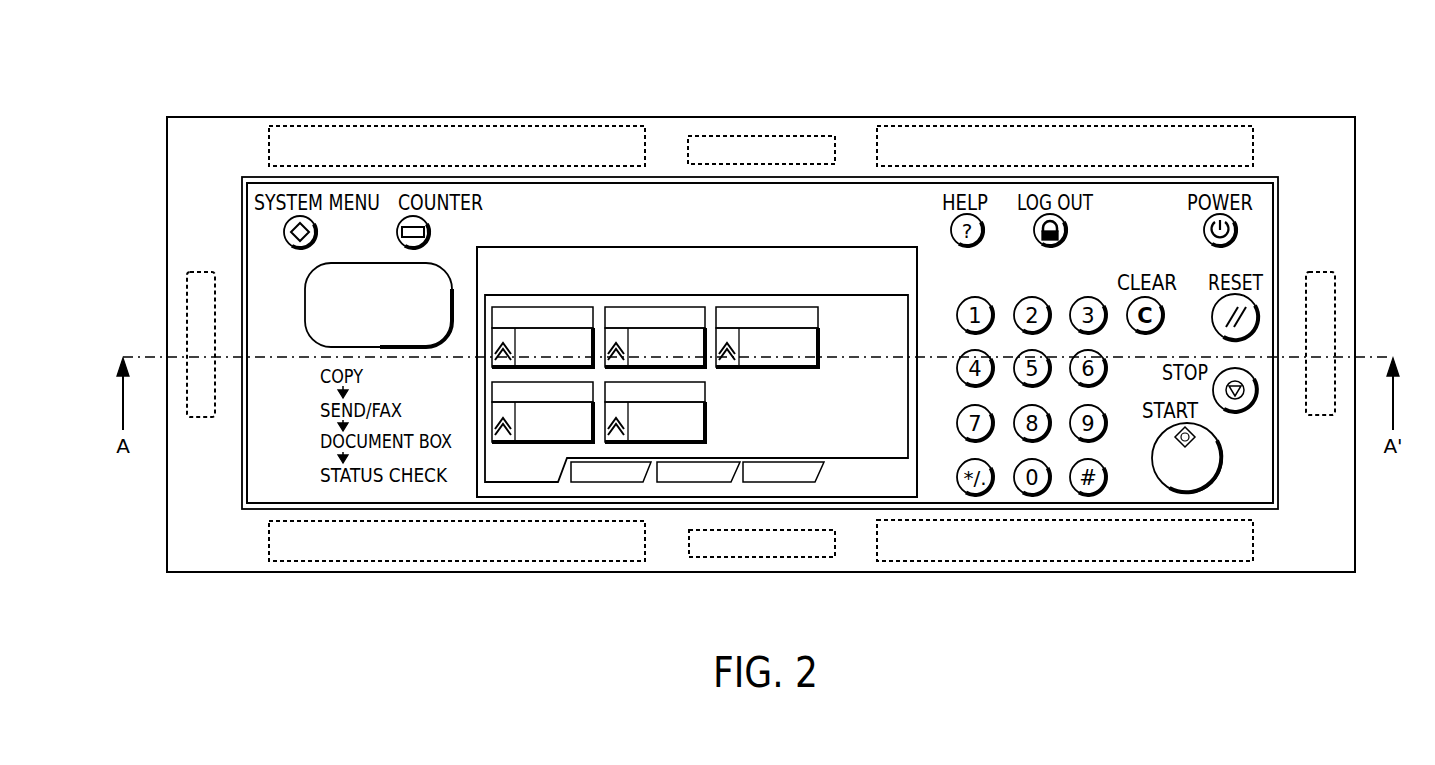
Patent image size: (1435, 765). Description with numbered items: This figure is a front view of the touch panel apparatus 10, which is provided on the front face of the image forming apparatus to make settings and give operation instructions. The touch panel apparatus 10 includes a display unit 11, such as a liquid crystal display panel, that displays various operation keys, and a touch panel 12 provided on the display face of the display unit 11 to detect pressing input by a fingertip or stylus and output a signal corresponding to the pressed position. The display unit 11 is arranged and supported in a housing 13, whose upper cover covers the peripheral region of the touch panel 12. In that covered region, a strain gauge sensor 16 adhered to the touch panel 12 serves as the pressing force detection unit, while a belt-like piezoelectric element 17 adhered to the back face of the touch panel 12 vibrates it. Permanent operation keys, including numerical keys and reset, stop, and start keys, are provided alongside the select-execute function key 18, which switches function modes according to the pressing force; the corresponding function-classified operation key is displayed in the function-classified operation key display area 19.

The touch panel apparatus 10 is at (1052, 86).
The display unit 11 is at (760, 272).
The touch panel 12 is at (850, 215).
The housing 13 is at (1283, 116).
The strain gauge sensor 16 is at (787, 143).
The piezoelectric element 17 is at (585, 132).
The select-execute function key 18 is at (307, 293).
The function-classified operation key display area 19 is at (757, 247).